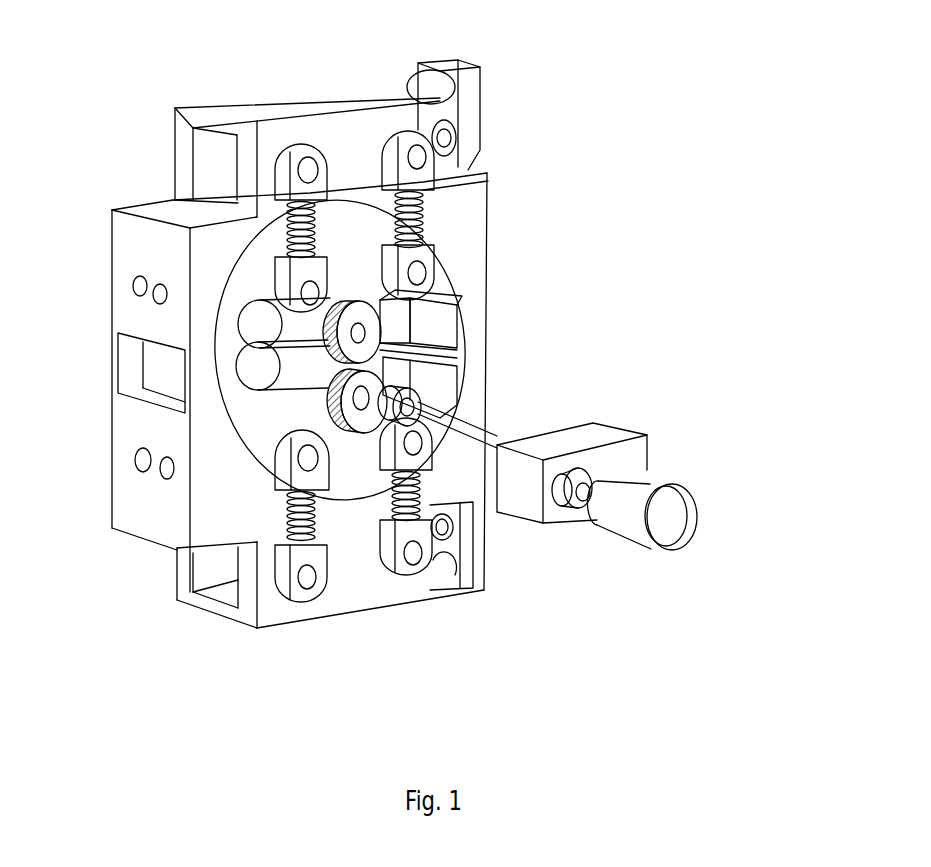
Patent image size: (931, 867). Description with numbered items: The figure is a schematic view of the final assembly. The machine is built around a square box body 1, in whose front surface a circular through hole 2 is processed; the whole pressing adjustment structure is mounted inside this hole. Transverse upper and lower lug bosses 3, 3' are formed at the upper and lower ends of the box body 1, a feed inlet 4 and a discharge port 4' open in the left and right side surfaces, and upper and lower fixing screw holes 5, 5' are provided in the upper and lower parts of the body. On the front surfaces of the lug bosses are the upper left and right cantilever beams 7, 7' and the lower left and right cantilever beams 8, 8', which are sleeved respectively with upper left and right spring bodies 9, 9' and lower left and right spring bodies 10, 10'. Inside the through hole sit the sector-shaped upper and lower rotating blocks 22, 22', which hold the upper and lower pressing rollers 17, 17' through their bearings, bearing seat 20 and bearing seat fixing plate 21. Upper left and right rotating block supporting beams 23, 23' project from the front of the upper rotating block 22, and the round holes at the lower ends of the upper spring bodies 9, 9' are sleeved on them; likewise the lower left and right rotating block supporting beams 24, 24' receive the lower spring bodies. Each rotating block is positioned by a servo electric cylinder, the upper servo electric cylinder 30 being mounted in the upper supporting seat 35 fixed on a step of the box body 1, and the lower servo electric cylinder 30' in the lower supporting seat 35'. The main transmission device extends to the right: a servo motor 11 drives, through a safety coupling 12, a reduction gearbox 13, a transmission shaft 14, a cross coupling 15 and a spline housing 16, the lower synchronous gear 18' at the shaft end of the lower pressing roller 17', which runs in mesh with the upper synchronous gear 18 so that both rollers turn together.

The box body 1 is at (453, 205).
The circular through hole 2 is at (233, 350).
The upper lug boss 3 is at (160, 143).
The lower lug boss 3' is at (156, 591).
The feed inlet 4 is at (123, 368).
The discharge port 4' is at (480, 306).
The upper fixing screw hole 5 is at (114, 256).
The lower fixing screw hole 5' is at (113, 457).
The upper left cantilever beam 7 is at (278, 96).
The upper right cantilever beam 7' is at (426, 100).
The lower left cantilever beam 8 is at (264, 602).
The lower right cantilever beam 8' is at (428, 593).
The upper left spring body 9 is at (188, 191).
The upper right spring body 9' is at (488, 176).
The lower left spring body 10 is at (237, 628).
The lower right spring body 10' is at (387, 565).
The servo motor 11 is at (633, 505).
The safety coupling 12 is at (582, 487).
The reduction gearbox 13 is at (583, 440).
The transmission shaft 14 is at (473, 428).
The cross coupling 15 is at (455, 410).
The spline housing 16 is at (295, 398).
The upper pressing roller 17 is at (186, 300).
The lower pressing roller 17' is at (184, 370).
The upper synchronous gear 18 is at (486, 278).
The lower synchronous gear 18' is at (493, 357).
The left bearing seat 20 is at (338, 310).
The left bearing seat fixing plate 21 is at (296, 212).
The upper rotating block 22 is at (397, 129).
The lower rotating block 22' is at (307, 599).
The upper left rotating block supporting beam 23 is at (184, 243).
The upper right rotating block supporting beam 23' is at (492, 235).
The lower left rotating block supporting beam 24 is at (185, 484).
The lower right rotating block supporting beam 24' is at (532, 541).
The upper servo electric cylinder 30 is at (505, 90).
The lower servo electric cylinder 30' is at (486, 607).
The upper supporting seat 35 is at (500, 114).
The lower supporting seat 35' is at (529, 610).